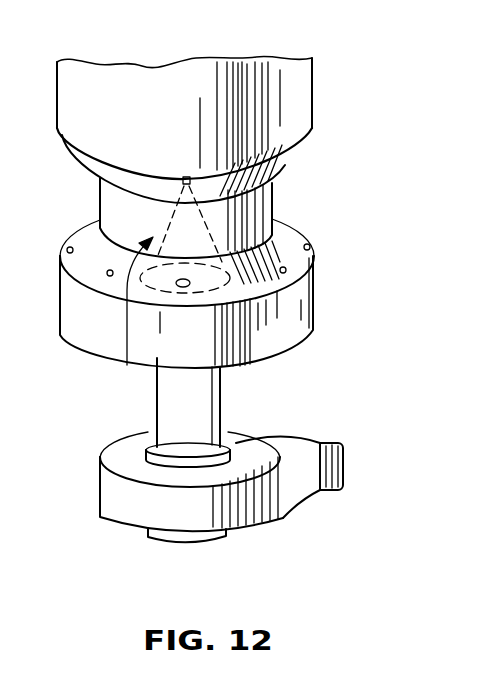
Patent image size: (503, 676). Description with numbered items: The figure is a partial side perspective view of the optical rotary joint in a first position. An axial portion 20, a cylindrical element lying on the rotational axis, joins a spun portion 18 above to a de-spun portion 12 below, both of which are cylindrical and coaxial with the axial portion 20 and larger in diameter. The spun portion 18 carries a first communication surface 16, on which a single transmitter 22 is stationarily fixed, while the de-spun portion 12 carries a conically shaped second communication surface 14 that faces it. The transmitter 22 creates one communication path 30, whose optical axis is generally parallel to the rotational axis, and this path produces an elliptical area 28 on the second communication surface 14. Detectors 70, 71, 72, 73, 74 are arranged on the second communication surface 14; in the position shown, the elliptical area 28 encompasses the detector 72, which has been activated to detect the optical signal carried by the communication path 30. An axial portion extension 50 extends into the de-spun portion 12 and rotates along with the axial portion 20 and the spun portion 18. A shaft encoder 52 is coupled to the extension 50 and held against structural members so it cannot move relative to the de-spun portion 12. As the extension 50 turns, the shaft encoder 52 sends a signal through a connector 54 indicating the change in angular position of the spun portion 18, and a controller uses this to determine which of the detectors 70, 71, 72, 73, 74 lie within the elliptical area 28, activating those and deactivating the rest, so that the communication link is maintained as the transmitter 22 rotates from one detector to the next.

The de-spun portion 12 is at (313, 288).
The second communication surface 14 is at (303, 268).
The first communication surface 16 is at (272, 173).
The spun portion 18 is at (293, 93).
The axial portion 20 is at (263, 198).
The transmitter 22 is at (183, 177).
The elliptical area 28 is at (212, 290).
The communication path 30 is at (134, 319).
The axial portion extension 50 is at (200, 416).
The shaft encoder 52 is at (133, 508).
The connector 54 is at (333, 490).
The detector 70 is at (310, 245).
The detector 71 is at (286, 272).
The detector 72 is at (187, 286).
The detector 73 is at (108, 277).
The detector 74 is at (66, 253).